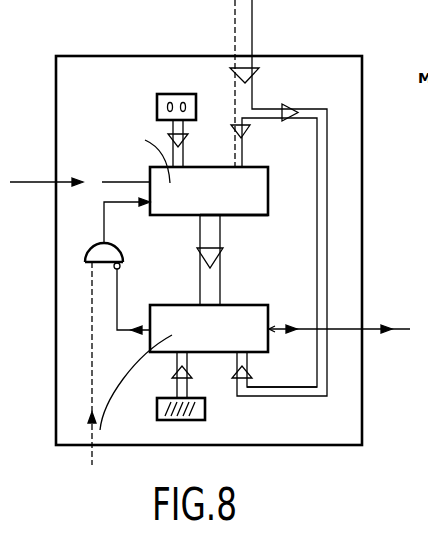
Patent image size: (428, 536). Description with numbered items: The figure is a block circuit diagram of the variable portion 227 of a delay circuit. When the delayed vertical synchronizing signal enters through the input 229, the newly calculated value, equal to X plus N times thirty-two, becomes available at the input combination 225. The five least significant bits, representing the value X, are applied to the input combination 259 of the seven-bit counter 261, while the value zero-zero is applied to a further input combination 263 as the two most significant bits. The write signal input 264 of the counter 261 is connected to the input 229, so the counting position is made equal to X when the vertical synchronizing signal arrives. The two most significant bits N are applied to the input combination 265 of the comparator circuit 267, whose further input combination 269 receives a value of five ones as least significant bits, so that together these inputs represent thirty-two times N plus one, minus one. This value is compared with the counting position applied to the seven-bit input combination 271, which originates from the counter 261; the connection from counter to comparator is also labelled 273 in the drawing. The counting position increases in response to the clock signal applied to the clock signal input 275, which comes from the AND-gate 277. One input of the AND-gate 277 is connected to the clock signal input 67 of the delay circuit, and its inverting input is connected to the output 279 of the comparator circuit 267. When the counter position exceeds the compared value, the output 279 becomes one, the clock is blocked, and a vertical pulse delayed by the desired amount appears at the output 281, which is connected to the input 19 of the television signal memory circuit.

The input combination 225 is at (252, 36).
The variable portion 227 is at (353, 75).
The further input combination 263 is at (184, 162).
The write signal input 264 is at (148, 178).
The input 229 is at (52, 188).
The input combination 259 is at (238, 170).
The AND-gate 277 is at (92, 243).
The clock signal input 275 is at (146, 205).
The counter output line 273 is at (200, 221).
The seven-bit input combination 271 is at (212, 304).
The seven-bit counter 261 is at (239, 208).
The comparator circuit 267 is at (237, 318).
The output 281 is at (281, 300).
The input of the television signal memory circuit 19 is at (401, 326).
The output 279 is at (148, 333).
The further input combination 269 is at (183, 354).
The input combination 265 is at (251, 360).
The clock signal input 67 is at (92, 463).
The value X is at (241, 150).
The two most significant bits N is at (287, 393).